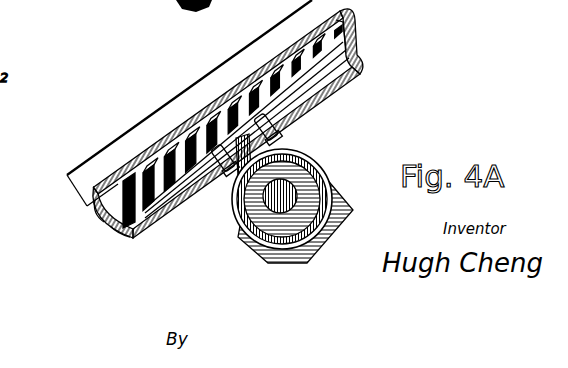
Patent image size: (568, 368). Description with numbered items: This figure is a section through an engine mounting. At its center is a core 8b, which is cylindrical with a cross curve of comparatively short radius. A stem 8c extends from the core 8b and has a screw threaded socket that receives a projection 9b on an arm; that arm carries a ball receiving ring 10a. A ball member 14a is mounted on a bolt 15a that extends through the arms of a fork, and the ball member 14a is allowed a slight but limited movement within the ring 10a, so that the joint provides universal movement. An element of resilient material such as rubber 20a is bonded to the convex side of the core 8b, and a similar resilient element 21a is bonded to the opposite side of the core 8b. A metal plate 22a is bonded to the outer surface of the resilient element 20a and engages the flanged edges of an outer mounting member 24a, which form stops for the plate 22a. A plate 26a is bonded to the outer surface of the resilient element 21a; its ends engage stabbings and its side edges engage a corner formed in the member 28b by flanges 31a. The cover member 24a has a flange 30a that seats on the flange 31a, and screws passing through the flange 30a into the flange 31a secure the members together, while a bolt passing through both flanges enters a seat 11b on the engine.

The core 8b is at (120, 210).
The stem 8c is at (283, 139).
The projection 9b is at (224, 181).
The ball receiving ring 10a is at (279, 244).
The seat 11b is at (150, 2).
The ball member 14a is at (248, 226).
The bolt 15a is at (281, 197).
The element of resilient material 20a is at (356, 60).
The element of resilient material 21a is at (94, 207).
The metal plate 22a is at (146, 222).
The outer mounting member 24a is at (122, 238).
The plate 26a is at (140, 157).
The member 28b is at (167, 140).
The flange 30a is at (345, 27).
The flange 31a is at (84, 200).